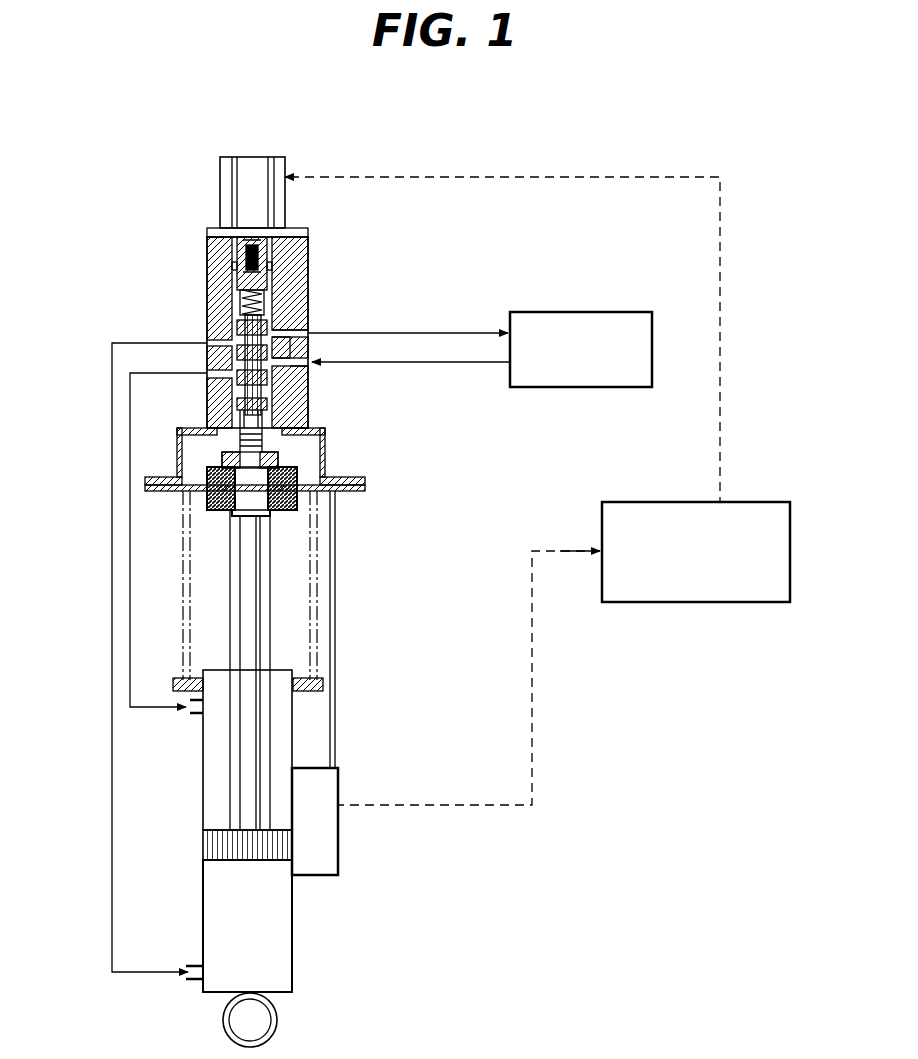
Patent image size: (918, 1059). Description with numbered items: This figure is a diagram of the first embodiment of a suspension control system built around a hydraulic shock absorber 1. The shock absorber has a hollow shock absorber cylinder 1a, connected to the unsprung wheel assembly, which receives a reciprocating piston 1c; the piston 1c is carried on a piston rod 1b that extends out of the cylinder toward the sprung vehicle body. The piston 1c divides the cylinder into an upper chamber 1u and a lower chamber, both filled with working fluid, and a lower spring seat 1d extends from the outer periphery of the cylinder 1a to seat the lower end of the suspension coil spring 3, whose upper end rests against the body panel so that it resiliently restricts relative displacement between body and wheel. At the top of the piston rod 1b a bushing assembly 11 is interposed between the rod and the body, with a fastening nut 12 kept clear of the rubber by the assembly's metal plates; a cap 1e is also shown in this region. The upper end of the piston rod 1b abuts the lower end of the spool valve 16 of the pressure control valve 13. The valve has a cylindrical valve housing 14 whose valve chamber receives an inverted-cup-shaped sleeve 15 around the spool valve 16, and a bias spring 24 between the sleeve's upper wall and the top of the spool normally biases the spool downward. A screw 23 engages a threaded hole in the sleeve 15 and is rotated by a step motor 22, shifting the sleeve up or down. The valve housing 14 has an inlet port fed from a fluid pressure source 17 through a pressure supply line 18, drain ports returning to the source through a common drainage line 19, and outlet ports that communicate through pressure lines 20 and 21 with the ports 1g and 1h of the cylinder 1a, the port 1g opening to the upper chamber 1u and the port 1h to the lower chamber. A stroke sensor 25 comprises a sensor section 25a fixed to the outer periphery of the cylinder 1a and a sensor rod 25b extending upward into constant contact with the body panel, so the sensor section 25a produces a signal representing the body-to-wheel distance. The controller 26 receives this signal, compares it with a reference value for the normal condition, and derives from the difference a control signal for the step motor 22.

The hydraulic shock absorber 1 is at (230, 778).
The shock absorber cylinder 1a is at (292, 930).
The piston rod 1b is at (245, 752).
The piston 1c is at (282, 845).
The lower spring seat 1d is at (262, 512).
The cap 1e is at (240, 447).
The port 1g is at (192, 714).
The port 1h is at (196, 980).
The upper chamber 1u is at (280, 755).
The suspension coil spring 3 is at (313, 565).
The bushing assembly 11 is at (300, 482).
The fastening nut 12 is at (272, 462).
The pressure control valve 13 is at (264, 312).
The valve housing 14 is at (300, 285).
The sleeve 15 is at (230, 292).
The spool valve 16 is at (238, 330).
The fluid pressure source 17 is at (577, 312).
The pressure supply line 18 is at (445, 362).
The drainage line 19 is at (430, 333).
The pressure line 20 is at (112, 560).
The pressure line 21 is at (130, 593).
The step motor 22 is at (265, 165).
The screw 23 is at (254, 238).
The bias spring 24 is at (236, 302).
The stroke sensor 25 is at (360, 810).
The sensor section 25a is at (318, 818).
The sensor rod 25b is at (334, 630).
The controller 26 is at (695, 603).